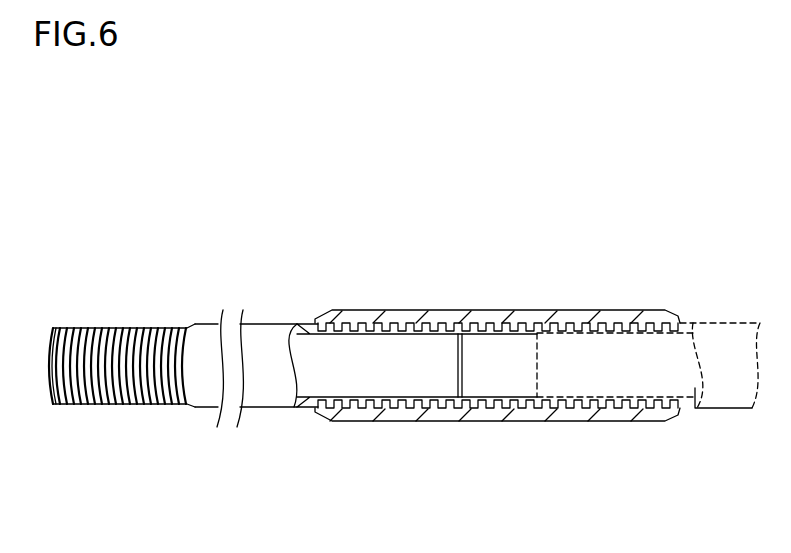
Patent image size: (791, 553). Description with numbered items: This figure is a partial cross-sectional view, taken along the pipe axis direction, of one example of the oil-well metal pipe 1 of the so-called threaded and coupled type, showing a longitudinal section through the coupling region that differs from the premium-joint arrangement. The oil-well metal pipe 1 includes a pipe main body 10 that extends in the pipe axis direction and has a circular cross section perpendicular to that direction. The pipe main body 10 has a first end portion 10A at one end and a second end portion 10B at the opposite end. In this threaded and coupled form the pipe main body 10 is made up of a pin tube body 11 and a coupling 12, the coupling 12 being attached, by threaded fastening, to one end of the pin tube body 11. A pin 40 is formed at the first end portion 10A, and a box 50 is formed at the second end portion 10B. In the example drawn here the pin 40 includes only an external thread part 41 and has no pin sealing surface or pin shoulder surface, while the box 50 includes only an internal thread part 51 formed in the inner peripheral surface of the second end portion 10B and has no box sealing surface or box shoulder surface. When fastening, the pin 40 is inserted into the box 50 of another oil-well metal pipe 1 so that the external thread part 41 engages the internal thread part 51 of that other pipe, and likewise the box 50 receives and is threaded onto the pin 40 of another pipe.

The oil-well metal pipe 1 is at (384, 93).
The pipe main body 10 is at (670, 207).
The first end portion 10A is at (122, 366).
The second end portion 10B is at (497, 364).
The pin tube body 11 is at (258, 320).
The coupling 12 is at (475, 309).
The pin 40 is at (103, 420).
The external thread part 41 is at (136, 406).
The box 50 is at (497, 412).
The internal thread part 51 is at (614, 401).